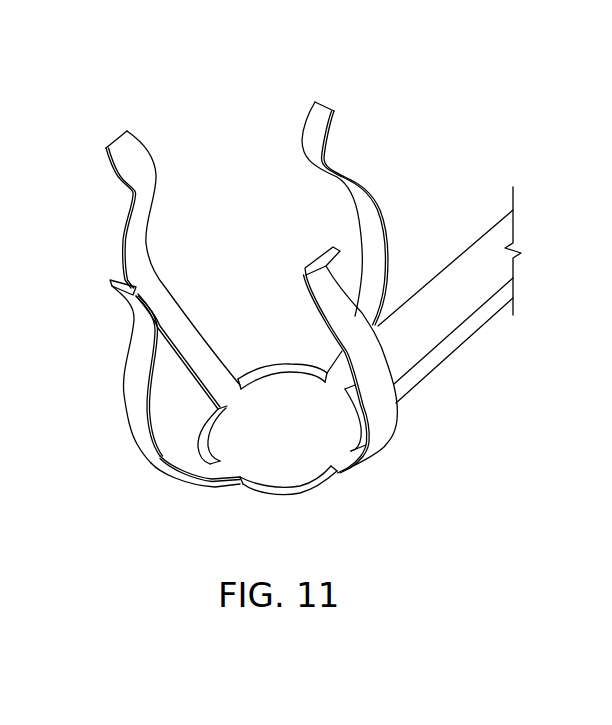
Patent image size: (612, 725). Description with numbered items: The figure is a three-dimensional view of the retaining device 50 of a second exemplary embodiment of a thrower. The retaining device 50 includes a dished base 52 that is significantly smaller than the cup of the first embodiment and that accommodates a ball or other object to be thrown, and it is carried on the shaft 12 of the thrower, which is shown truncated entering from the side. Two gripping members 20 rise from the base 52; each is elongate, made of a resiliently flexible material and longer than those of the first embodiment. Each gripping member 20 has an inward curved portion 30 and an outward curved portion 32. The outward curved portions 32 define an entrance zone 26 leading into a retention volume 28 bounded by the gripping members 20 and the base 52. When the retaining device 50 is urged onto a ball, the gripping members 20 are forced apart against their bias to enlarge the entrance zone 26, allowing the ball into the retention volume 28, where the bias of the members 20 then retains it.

The shaft 12 is at (479, 321).
The gripping member 20 is at (142, 443).
The entrance zone 26 is at (218, 115).
The retention volume 28 is at (206, 244).
The inward curved portion 30 is at (160, 469).
The outward curved portion 32 is at (114, 146).
The retaining device 50 is at (405, 93).
The base 52 is at (290, 492).